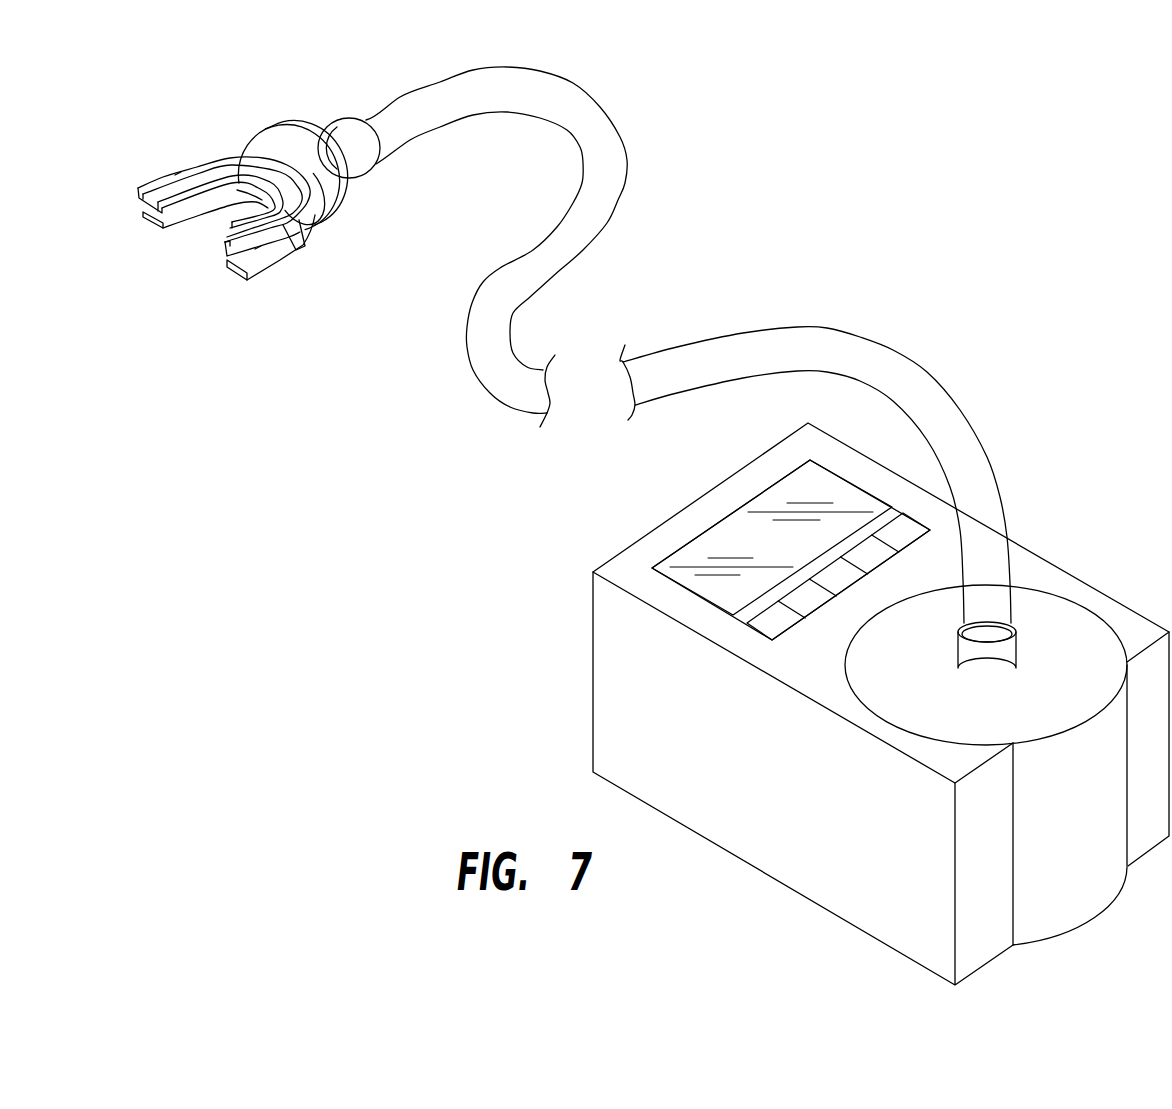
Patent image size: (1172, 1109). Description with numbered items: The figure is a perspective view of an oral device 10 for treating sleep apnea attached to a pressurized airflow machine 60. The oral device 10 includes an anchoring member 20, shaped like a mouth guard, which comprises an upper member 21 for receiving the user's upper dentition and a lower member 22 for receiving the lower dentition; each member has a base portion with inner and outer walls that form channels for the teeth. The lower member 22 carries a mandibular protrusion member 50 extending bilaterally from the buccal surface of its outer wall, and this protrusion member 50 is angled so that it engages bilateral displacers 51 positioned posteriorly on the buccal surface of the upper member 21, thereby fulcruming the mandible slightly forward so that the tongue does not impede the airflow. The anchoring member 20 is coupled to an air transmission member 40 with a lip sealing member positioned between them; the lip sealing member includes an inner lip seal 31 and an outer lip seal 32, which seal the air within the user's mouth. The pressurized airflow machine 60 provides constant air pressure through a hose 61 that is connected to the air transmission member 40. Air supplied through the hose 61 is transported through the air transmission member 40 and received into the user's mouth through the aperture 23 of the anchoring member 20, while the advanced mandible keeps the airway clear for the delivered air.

The oral device 10 is at (177, 108).
The anchoring member 20 is at (126, 163).
The upper member 21 is at (138, 193).
The lower member 22 is at (225, 263).
The aperture 23 is at (258, 198).
The inner lip seal 31 is at (313, 225).
The outer lip seal 32 is at (298, 130).
The air transmission member 40 is at (346, 118).
The mandibular protrusion member 50 is at (295, 242).
The bilateral displacers 51 is at (178, 173).
The pressurized airflow machine 60 is at (1063, 567).
The hose 61 is at (622, 197).